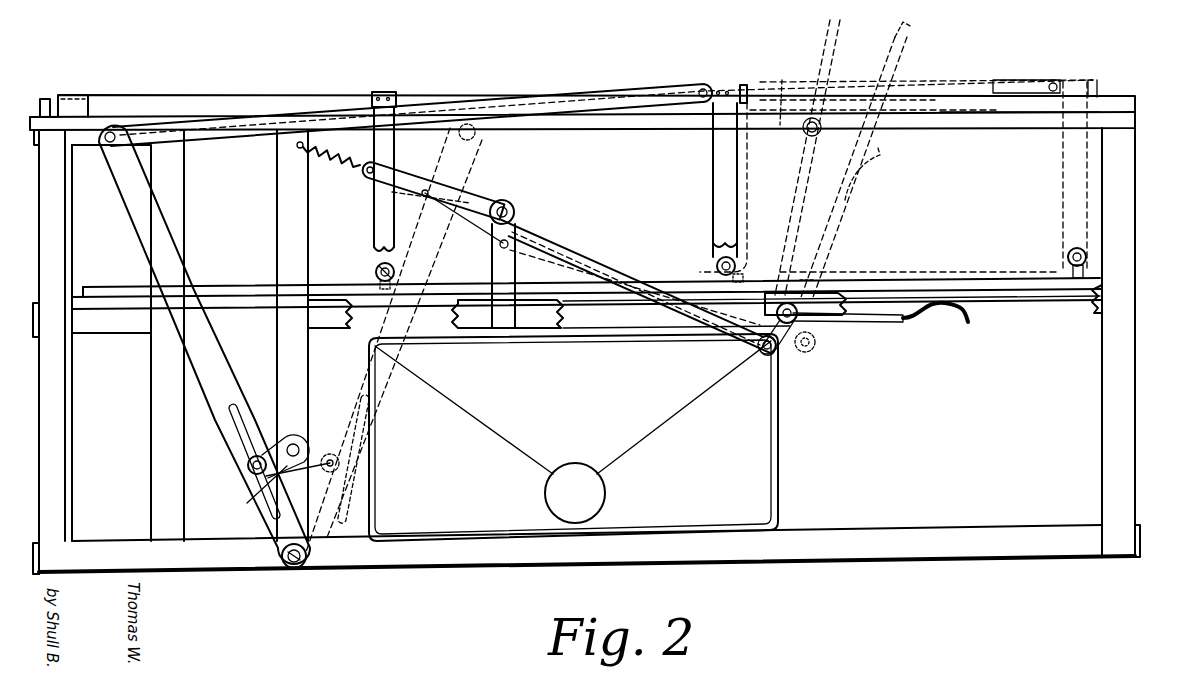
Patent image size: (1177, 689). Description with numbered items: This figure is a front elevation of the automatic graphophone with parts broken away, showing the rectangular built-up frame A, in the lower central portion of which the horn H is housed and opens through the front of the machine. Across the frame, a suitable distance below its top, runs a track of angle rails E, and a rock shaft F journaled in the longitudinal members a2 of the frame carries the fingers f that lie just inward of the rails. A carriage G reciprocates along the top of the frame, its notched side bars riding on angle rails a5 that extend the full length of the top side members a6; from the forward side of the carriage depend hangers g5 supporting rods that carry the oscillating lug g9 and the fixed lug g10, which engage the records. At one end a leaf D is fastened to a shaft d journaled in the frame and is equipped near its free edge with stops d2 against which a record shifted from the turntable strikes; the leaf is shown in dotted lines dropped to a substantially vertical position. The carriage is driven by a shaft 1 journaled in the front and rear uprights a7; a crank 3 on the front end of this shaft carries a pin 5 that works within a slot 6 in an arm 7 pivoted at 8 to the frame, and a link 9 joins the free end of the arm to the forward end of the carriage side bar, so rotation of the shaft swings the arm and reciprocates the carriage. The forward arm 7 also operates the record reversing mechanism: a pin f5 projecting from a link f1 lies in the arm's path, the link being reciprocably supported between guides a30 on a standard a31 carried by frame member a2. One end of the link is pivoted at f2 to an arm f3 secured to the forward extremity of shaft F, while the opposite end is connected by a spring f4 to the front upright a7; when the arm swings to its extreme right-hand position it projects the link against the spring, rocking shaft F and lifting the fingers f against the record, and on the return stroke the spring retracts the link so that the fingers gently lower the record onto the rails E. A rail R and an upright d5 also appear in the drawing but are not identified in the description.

The frame A is at (1122, 357).
The horn H is at (755, 443).
The rails R is at (230, 285).
The carriage G is at (445, 94).
The angle rails E is at (945, 286).
The rock shaft F is at (800, 331).
The leaf D is at (920, 124).
The shaft d is at (808, 131).
The stops d2 is at (940, 90).
The upright d5 is at (155, 388).
The longitudinal members a2 is at (549, 318).
The angle rails a5 is at (205, 116).
The top side members a6 is at (1043, 100).
The uprights a7 is at (300, 357).
The guides a30 is at (516, 212).
The standard a31 is at (512, 205).
The fingers f is at (900, 326).
The link f1 is at (607, 266).
The pivot f2 is at (762, 353).
The arm f3 is at (805, 353).
The spring f4 is at (340, 178).
The pin f5 is at (425, 189).
The hangers g5 is at (377, 231).
The lug g9 is at (378, 271).
The lug g10 is at (718, 266).
The shaft 1 is at (293, 444).
The crank 3 is at (275, 491).
The pin 5 is at (250, 466).
The slots 6 is at (240, 432).
The arms 7 is at (428, 352).
The pivot 8 is at (310, 552).
The links 9 is at (256, 120).